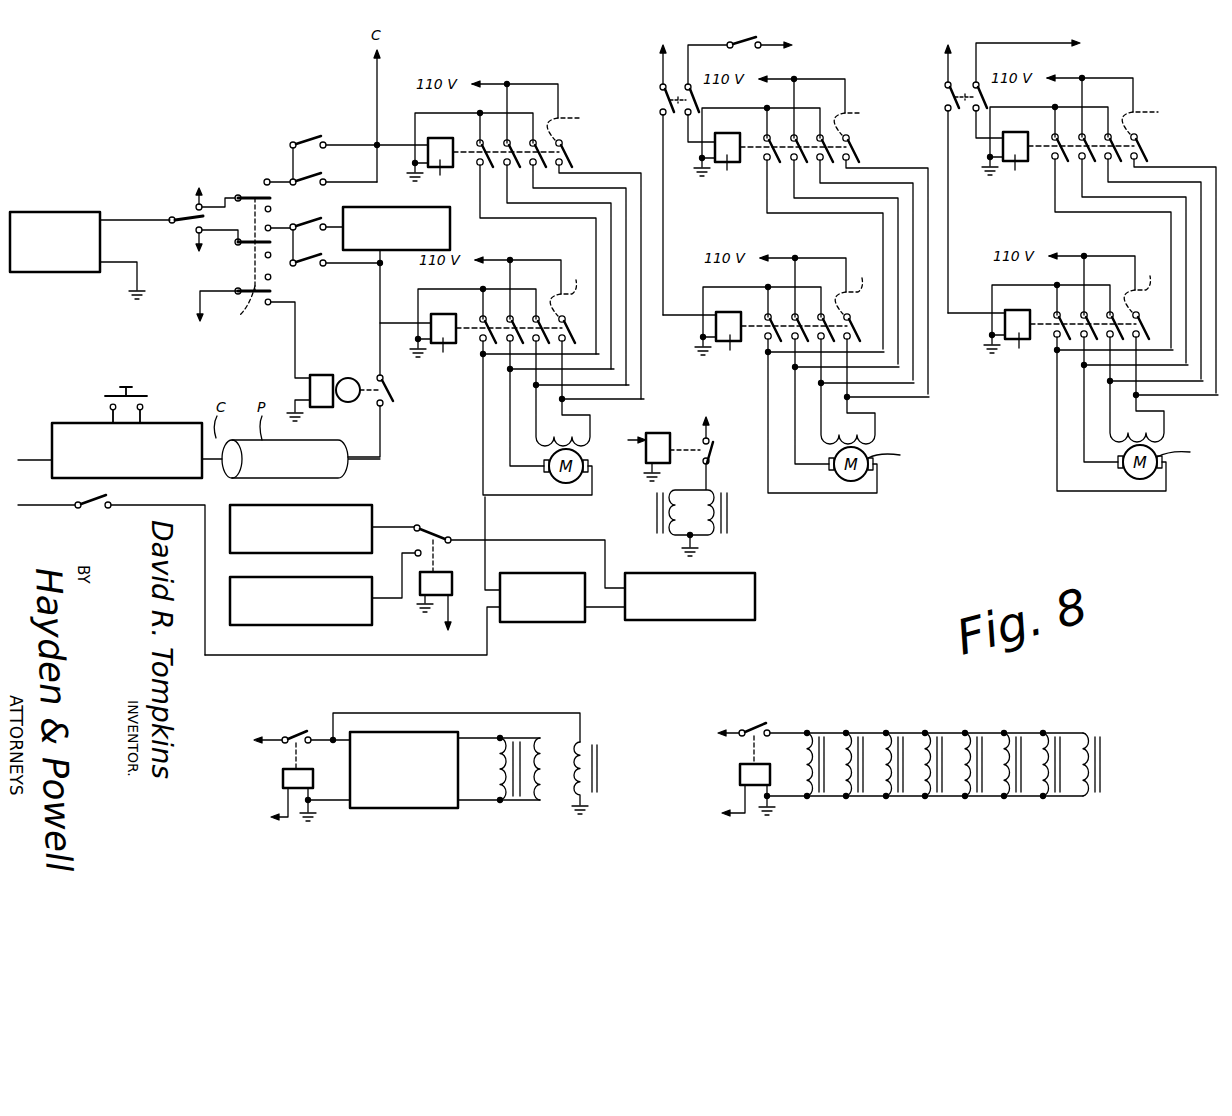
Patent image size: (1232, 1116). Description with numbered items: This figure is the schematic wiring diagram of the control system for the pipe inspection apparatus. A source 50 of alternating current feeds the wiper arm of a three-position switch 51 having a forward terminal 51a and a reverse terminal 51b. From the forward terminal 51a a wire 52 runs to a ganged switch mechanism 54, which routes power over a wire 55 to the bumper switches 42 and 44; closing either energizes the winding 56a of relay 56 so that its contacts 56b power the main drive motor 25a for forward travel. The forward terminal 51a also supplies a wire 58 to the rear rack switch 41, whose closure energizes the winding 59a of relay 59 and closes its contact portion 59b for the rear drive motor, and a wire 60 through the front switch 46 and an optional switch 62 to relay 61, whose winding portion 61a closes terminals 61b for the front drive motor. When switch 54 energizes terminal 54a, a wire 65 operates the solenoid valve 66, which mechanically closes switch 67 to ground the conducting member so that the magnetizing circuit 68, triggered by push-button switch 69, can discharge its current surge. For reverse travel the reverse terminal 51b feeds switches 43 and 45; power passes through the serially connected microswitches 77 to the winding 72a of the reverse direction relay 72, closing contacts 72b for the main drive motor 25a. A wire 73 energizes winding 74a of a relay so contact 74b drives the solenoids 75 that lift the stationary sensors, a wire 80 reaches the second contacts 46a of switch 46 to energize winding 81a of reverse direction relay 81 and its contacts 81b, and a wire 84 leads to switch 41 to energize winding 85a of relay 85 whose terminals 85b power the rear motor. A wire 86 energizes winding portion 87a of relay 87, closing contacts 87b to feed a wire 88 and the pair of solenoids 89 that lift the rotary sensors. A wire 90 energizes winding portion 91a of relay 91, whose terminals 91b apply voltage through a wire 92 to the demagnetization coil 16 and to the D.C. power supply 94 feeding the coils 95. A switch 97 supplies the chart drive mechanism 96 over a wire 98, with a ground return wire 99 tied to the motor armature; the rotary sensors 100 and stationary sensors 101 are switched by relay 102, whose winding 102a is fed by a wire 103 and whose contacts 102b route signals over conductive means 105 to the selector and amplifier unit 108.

The demagnetization coil 16 is at (606, 738).
The main drive motor 25a is at (552, 478).
The switch 41 is at (947, 86).
The switch 42 is at (306, 138).
The switch 43 is at (318, 268).
The switch 44 is at (305, 181).
The switch 45 is at (312, 222).
The switch 46 is at (662, 86).
The second set of contacts 46a is at (658, 110).
The source 50 is at (117, 212).
The switch 51 is at (182, 215).
The forward terminal 51a is at (196, 206).
The reverse terminal 51b is at (196, 230).
The wire 52 is at (230, 204).
The ganged switch mechanism 54 is at (219, 315).
The terminal 54a is at (266, 306).
The wire 55 is at (268, 179).
The relay 56 is at (524, 237).
The winding 56a is at (451, 177).
The contacts 56b is at (585, 118).
The wire 58 is at (990, 43).
The relay 59 is at (1096, 231).
The winding 59a is at (1015, 174).
The contact portion 59b is at (1161, 120).
The wire 60 is at (690, 68).
The relay 61 is at (808, 232).
The winding portion 61a is at (728, 171).
The terminals 61b is at (869, 121).
The switch 62 is at (737, 42).
The wire 65 is at (297, 318).
The solenoid valve 66 is at (322, 374).
The switch 67 is at (392, 408).
The magnetizing circuit 68 is at (70, 423).
The push-button switch 69 is at (150, 405).
The reverse direction relay 72 is at (512, 383).
The winding 72a is at (442, 360).
The contacts 72b is at (566, 280).
The wire 73 is at (745, 797).
The winding 74a is at (740, 780).
The contact 74b is at (755, 727).
The solenoids 75 is at (975, 740).
The microswitches 77 is at (450, 232).
The wire 80 is at (660, 76).
The reverse direction relay 81 is at (796, 383).
The winding 81a is at (737, 356).
The contacts 81b is at (856, 276).
The wire 84 is at (946, 74).
The relay 85 is at (1083, 381).
The winding 85a is at (1019, 350).
The terminals 85b is at (1141, 274).
The wire 86 is at (650, 433).
The relay 87 is at (688, 455).
The winding portion 87a is at (655, 440).
The contacts 87b is at (716, 450).
The wire 88 is at (712, 425).
The solenoids 89 is at (654, 521).
The wire 90 is at (286, 803).
The relay 91 is at (290, 752).
The winding portion 91a is at (282, 778).
The terminals 91b is at (296, 728).
The wire 92 is at (368, 713).
The D.C. power supply 94 is at (442, 732).
The coils 95 is at (525, 740).
The chart drive mechanism 96 is at (543, 622).
The switch 97 is at (82, 510).
The wire 98 is at (266, 656).
The ground return wire 99 is at (484, 480).
The rotary sensors 100 is at (362, 505).
The stationary sensors 101 is at (353, 625).
The relay 102 is at (436, 556).
The winding 102a is at (443, 586).
The contacts 102b is at (440, 525).
The wire 103 is at (449, 607).
The conductive means 105 is at (490, 538).
The selector and amplifier unit 108 is at (674, 620).